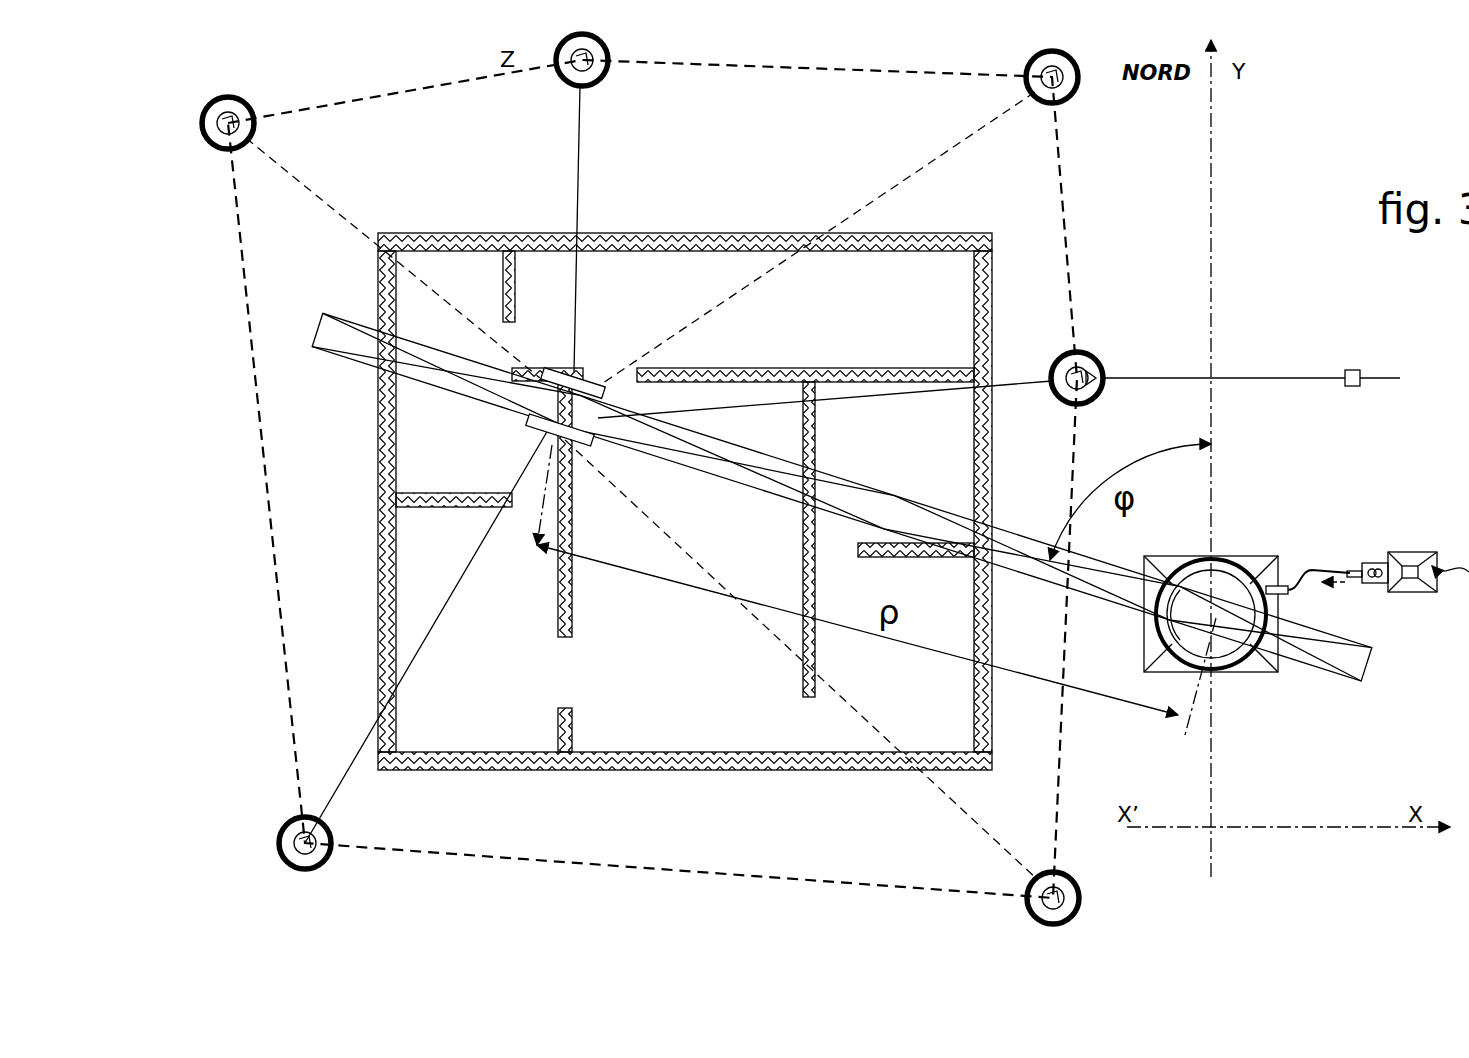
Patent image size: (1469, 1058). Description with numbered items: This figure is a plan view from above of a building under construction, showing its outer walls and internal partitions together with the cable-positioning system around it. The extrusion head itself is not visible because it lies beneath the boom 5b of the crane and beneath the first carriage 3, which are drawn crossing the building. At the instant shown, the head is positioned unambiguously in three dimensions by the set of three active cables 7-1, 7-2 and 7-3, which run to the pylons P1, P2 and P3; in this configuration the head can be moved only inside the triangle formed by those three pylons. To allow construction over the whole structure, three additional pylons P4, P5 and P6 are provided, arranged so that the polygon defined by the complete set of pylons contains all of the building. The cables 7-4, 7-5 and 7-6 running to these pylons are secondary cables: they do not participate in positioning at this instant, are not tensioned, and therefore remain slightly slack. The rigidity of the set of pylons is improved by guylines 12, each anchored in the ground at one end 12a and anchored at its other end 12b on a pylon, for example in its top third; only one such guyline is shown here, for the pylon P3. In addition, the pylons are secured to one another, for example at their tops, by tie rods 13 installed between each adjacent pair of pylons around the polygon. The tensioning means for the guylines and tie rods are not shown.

The first carriage 3 is at (532, 440).
The boom 5b is at (352, 360).
The cable 7-1 is at (432, 648).
The cable 7-2 is at (578, 192).
The cable 7-3 is at (1015, 386).
The secondary cable 7-4 is at (332, 212).
The secondary cable 7-5 is at (903, 187).
The secondary cable 7-6 is at (888, 730).
The guyline 12 is at (1290, 376).
The ground anchoring end 12a is at (1408, 378).
The pylon anchoring end 12b is at (1090, 403).
The tie rod 13 is at (368, 100).
The pylon P1 is at (278, 845).
The pylon P2 is at (608, 64).
The pylon P3 is at (1103, 364).
The pylon P4 is at (203, 120).
The pylon P5 is at (1025, 72).
The pylon P6 is at (1025, 898).